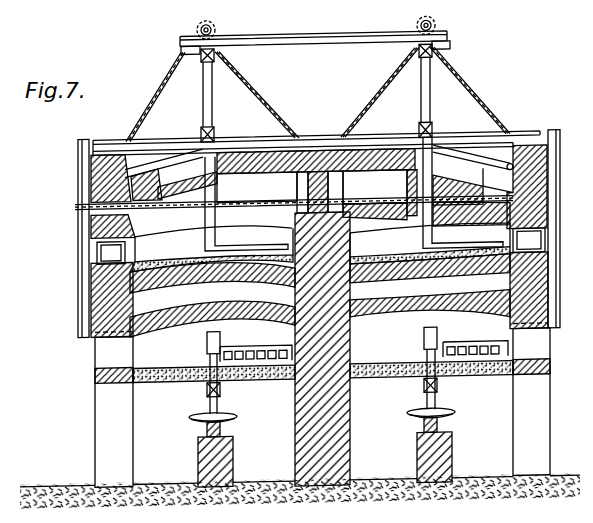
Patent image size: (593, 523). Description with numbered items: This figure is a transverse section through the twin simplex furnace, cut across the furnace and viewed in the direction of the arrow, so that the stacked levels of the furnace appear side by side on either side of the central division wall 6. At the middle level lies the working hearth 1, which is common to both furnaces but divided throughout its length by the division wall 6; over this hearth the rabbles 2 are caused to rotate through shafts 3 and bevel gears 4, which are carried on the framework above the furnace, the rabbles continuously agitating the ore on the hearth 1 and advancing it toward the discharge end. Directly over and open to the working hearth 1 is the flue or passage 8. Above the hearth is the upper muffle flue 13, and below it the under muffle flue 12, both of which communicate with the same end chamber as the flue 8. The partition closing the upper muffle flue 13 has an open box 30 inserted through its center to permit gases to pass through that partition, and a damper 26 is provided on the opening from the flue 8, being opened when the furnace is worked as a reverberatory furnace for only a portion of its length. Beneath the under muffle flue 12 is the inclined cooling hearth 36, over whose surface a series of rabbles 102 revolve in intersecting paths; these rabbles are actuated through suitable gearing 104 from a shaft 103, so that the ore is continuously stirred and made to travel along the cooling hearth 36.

The working hearth 1 is at (193, 257).
The rabbles 2 is at (354, 194).
The shafts 3 is at (199, 26).
The bevel gears 4 is at (181, 47).
The division wall 6 is at (336, 188).
The flue 8 is at (322, 241).
The flue 12 is at (320, 295).
The flue 13 is at (312, 197).
The damper 26 is at (76, 202).
The open box 30 is at (292, 193).
The cooling hearth 36 is at (322, 362).
The rabbles 102 is at (364, 342).
The shaft 103 is at (222, 427).
The gearing 104 is at (319, 375).